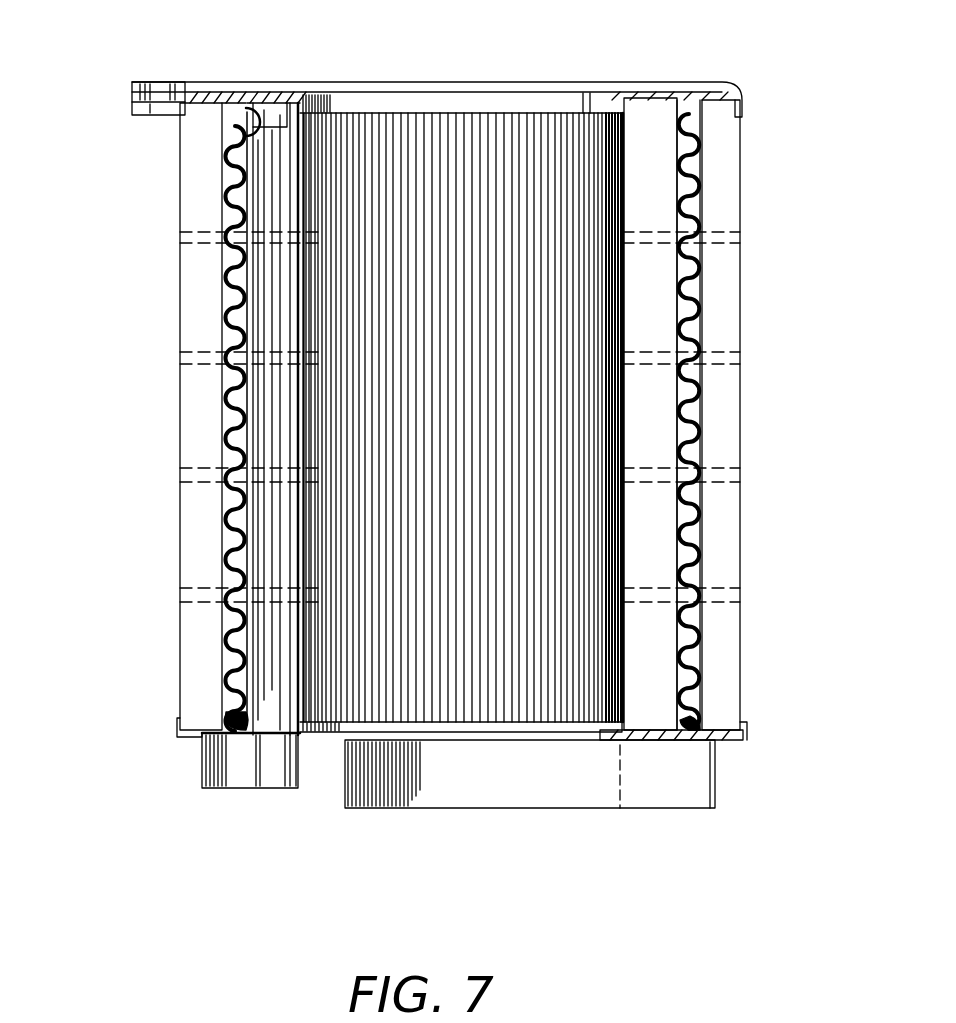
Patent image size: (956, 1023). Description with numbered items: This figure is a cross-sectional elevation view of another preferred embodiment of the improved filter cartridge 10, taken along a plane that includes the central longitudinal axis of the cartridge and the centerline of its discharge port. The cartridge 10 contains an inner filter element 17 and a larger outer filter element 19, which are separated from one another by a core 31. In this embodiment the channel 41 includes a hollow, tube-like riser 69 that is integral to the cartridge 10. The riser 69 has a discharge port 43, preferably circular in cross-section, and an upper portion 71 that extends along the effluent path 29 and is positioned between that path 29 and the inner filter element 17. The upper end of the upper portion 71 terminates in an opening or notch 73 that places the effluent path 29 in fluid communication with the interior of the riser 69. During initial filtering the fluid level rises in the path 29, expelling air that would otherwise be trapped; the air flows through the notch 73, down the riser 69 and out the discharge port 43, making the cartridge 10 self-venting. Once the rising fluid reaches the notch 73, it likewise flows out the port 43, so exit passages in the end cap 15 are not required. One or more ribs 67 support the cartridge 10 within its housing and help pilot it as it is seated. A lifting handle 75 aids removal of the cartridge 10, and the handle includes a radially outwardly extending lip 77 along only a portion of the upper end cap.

The cartridge 10 is at (456, 54).
The end cap 15 is at (748, 724).
The inner filter element 17 is at (646, 135).
The filter element 19 is at (200, 208).
The effluent path 29 is at (228, 548).
The core 31 is at (228, 518).
The channel 41 is at (277, 810).
The discharge port 43 is at (205, 775).
The rib 67 is at (560, 798).
The riser 69 is at (230, 432).
The upper portion 71 is at (270, 258).
The notch 73 is at (222, 130).
The lifting handle 75 is at (175, 80).
The lip 77 is at (136, 96).